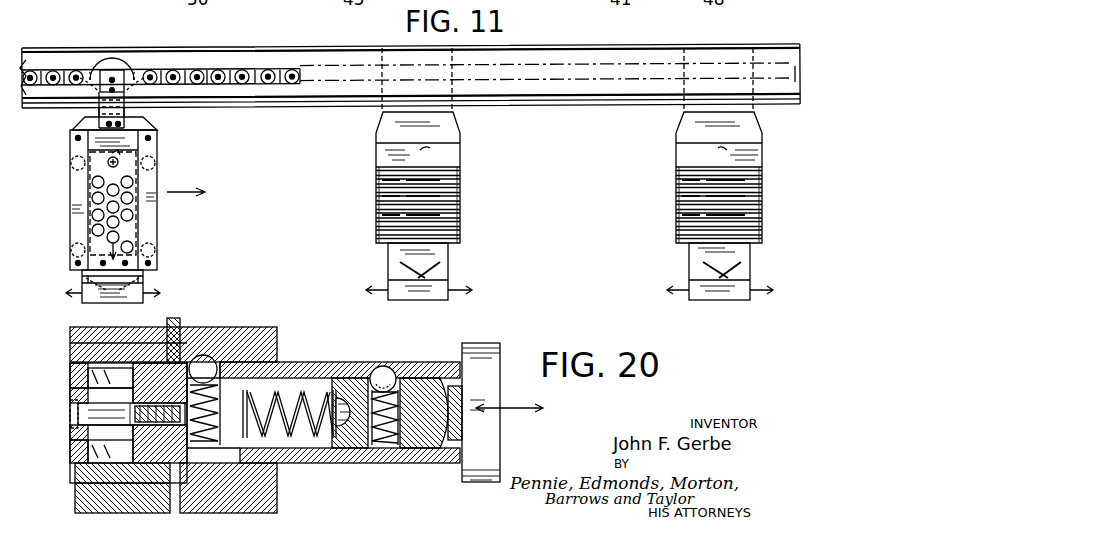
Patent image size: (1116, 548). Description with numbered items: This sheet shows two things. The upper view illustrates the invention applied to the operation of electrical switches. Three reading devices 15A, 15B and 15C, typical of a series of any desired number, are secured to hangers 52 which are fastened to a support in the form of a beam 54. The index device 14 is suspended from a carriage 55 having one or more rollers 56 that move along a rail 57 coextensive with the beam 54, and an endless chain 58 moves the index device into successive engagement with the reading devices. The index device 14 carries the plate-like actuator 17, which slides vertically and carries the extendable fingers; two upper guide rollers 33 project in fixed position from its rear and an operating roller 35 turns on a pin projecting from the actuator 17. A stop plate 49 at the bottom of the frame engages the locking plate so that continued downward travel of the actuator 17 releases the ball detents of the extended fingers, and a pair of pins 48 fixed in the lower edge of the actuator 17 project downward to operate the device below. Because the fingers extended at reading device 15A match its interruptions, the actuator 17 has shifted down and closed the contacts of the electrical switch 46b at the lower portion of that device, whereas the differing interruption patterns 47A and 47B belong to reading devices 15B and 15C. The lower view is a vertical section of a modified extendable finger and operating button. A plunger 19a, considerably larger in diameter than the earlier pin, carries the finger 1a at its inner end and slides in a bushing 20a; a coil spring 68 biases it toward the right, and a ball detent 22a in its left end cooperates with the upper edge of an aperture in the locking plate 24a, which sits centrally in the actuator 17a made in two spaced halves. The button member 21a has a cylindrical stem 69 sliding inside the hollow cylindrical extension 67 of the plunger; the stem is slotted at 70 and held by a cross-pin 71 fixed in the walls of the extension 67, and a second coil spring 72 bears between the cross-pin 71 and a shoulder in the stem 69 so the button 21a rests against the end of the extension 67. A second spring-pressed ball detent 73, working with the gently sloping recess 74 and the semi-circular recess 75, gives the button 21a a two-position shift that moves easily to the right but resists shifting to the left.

In FIG. 11, the beam 54 is at (520, 60).
In FIG. 11, the endless chain 58 is at (258, 76).
In FIG. 11, the carriage 55 is at (138, 76).
In FIG. 11, the roller 56 is at (110, 62).
In FIG. 11, the rail 57 is at (300, 130).
In FIG. 11, the hanger 52 is at (140, 112).
In FIG. 11, the index device 14 is at (62, 156).
In FIG. 11, the upper guide roller 33 is at (147, 160).
In FIG. 11, the operating roller 35 is at (85, 172).
In FIG. 11, the actuator 17 is at (82, 192).
In FIG. 11, the stop plate 49 is at (72, 256).
In FIG. 11, the pin 48 is at (82, 278).
In FIG. 11, the reading device 15A is at (74, 290).
In FIG. 11, the electrical switch 46b is at (130, 302).
In FIG. 11, the reading device 15B is at (374, 224).
In FIG. 11, the rail interruption pattern 47A is at (415, 218).
In FIG. 11, the reading device 15C is at (675, 224).
In FIG. 11, the rail interruption pattern 47B is at (735, 198).
In FIG. 20, the bushing 20a is at (278, 346).
In FIG. 20, the plate-like actuator 17a is at (277, 498).
In FIG. 20, the plunger 19a is at (160, 478).
In FIG. 20, the locking plate 24a is at (172, 320).
In FIG. 20, the coil spring 68 is at (95, 367).
In FIG. 20, the finger 1a is at (78, 422).
In FIG. 20, the ball detent 22a is at (212, 360).
In FIG. 20, the cylindrical stem 69 is at (358, 436).
In FIG. 20, the slot 70 is at (330, 375).
In FIG. 20, the second coil spring 72 is at (318, 446).
In FIG. 20, the second spring-pressed ball detent 73 is at (385, 374).
In FIG. 20, the cross-pin 71 is at (375, 390).
In FIG. 20, the recess 74 is at (405, 378).
In FIG. 20, the semi-circular recess 75 is at (445, 372).
In FIG. 20, the hollow cylindrical extension 67 is at (395, 462).
In FIG. 20, the button member 21a is at (483, 353).